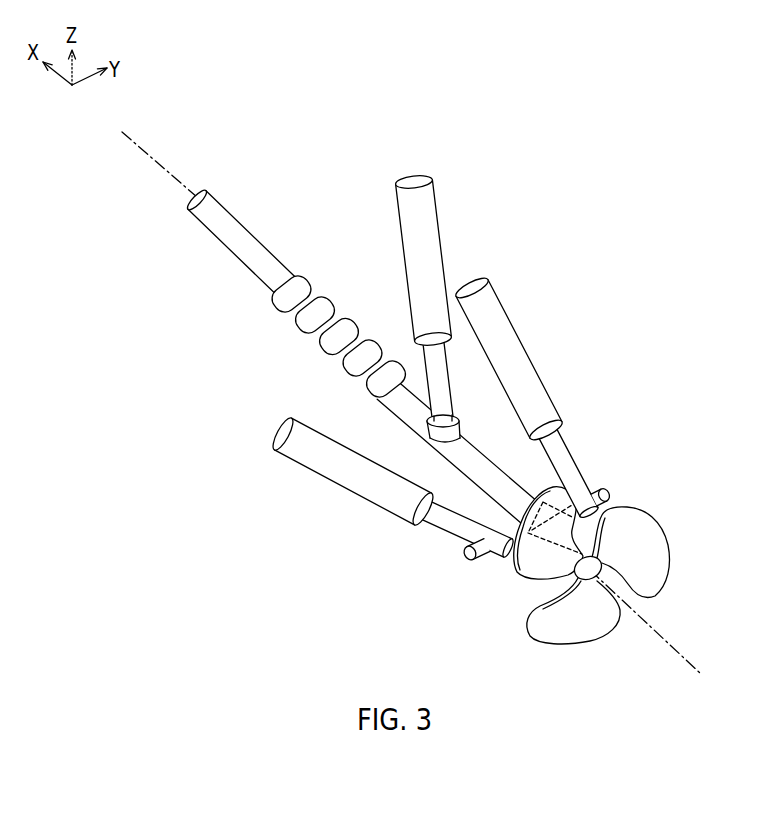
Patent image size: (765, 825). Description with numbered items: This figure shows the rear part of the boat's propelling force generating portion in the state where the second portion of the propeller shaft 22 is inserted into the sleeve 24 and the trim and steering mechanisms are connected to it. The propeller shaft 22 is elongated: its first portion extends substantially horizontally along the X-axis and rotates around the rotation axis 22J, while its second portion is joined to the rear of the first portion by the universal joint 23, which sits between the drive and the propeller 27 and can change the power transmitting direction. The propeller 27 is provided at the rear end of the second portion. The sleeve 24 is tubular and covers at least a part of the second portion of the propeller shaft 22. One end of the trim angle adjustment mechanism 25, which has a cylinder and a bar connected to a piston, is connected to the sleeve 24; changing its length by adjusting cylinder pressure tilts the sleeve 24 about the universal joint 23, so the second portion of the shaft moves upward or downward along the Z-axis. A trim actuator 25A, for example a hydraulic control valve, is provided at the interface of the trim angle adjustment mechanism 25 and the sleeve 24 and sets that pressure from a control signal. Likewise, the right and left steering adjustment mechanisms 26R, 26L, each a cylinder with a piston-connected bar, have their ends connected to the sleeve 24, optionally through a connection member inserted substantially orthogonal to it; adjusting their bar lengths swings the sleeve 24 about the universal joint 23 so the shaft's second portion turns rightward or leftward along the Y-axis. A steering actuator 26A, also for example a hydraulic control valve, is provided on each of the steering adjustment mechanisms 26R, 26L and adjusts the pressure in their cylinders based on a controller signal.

The rotation axis 22J is at (166, 174).
The propeller shaft 22 is at (240, 268).
The universal joint 23 is at (286, 333).
The sleeve 24 is at (409, 427).
The trim angle adjustment mechanism 25 is at (452, 375).
The trim actuator 25A is at (462, 425).
The right steering adjustment mechanism 26R is at (578, 452).
The left steering adjustment mechanism 26L is at (438, 533).
The steering actuator 26A is at (613, 493).
The propeller 27 is at (664, 538).